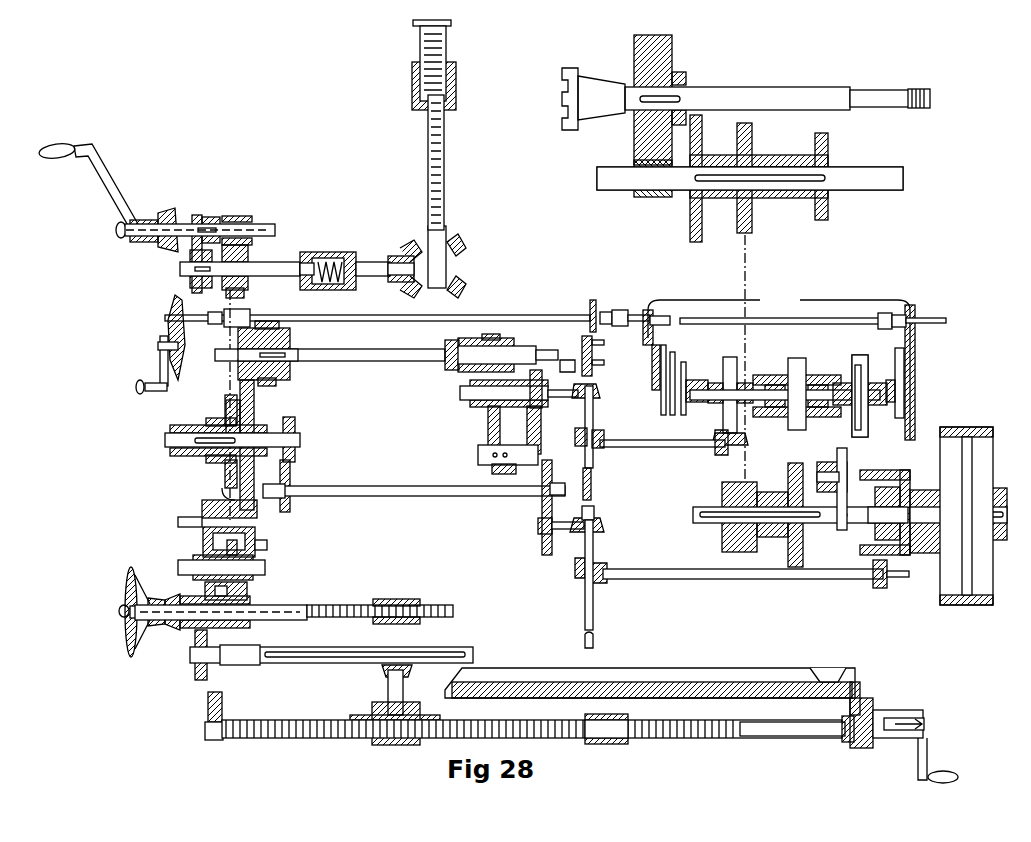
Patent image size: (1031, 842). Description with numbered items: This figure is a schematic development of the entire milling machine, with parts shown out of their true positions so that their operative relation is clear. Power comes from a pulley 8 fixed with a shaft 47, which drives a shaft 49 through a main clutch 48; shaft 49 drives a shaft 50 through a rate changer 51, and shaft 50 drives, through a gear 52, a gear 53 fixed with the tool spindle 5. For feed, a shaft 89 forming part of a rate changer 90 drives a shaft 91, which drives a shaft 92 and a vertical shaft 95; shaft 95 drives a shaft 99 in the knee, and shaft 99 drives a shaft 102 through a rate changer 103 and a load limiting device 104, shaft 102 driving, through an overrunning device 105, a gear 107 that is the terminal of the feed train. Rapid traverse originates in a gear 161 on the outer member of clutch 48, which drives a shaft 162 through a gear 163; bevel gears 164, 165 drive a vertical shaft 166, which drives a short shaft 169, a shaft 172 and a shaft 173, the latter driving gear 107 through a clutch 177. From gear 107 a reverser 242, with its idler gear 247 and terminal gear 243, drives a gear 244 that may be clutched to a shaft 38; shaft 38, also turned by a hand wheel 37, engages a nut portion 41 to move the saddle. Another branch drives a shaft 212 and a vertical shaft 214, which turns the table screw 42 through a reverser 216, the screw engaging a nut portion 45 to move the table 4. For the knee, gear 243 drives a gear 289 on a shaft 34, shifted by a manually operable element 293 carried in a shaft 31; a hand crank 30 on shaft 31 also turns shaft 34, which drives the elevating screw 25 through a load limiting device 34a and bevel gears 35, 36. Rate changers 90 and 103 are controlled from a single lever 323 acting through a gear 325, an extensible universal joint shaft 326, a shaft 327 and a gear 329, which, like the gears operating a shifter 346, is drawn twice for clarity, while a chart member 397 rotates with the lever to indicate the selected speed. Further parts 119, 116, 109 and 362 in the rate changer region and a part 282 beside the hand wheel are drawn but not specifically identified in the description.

The hand crank 30 is at (97, 160).
The manually operable element 293 is at (116, 230).
The shaft 31 is at (262, 222).
The gear 289 is at (250, 282).
The load limiting device 34a is at (318, 250).
The shaft 34 is at (378, 278).
The bevel gear 35 is at (392, 256).
The bevel gear 36 is at (462, 242).
The elevating screw 25 is at (425, 105).
The gear 53 is at (672, 52).
The tool spindle 5 is at (566, 130).
The gear 52 is at (660, 197).
The shaft 50 is at (843, 186).
The rate changer 51 is at (765, 202).
The chart member 397 is at (172, 303).
The lever 323 is at (165, 355).
The shaft 102 is at (372, 362).
The overrunning device 105 is at (286, 376).
The gear 107 is at (256, 400).
The load limiting device 104 is at (460, 376).
The shaft 99 is at (554, 398).
The rate changer 103 is at (473, 424).
The gear 325 is at (604, 306).
The gear 329 is at (779, 366).
The extensible universal joint shaft 326 is at (806, 323).
The shaft 327 is at (940, 320).
The shifter 346 is at (688, 366).
The gear 119 is at (720, 383).
The shaft 91 is at (722, 420).
The gear 116 is at (786, 408).
The rate changer 90 is at (786, 370).
The gear 109 is at (855, 368).
The pin 362 is at (892, 372).
The shaft 89 is at (862, 424).
The shaft 92 is at (676, 446).
The vertical shaft 95 is at (594, 481).
The shaft 173 is at (297, 442).
The clutch 177 is at (215, 488).
The shaft 172 is at (378, 490).
The short shaft 169 is at (560, 535).
The bevel gear 165 is at (596, 548).
The bevel gear 164 is at (604, 562).
The shaft 166 is at (594, 600).
The shaft 162 is at (713, 579).
The gear 163 is at (884, 588).
The shaft 49 is at (712, 525).
The gear 161 is at (880, 462).
The main clutch 48 is at (900, 470).
The shaft 47 is at (997, 524).
The pulley 8 is at (948, 606).
The reverser 242 is at (191, 541).
The gear 243 is at (240, 549).
The idler gear 247 is at (264, 546).
The gear 244 is at (250, 590).
The knob 282 is at (118, 612).
The hand wheel 37 is at (136, 655).
The shaft 38 is at (284, 618).
The nut portion 41 is at (416, 590).
The shaft 212 is at (252, 662).
The vertical shaft 214 is at (400, 692).
The reverser 216 is at (440, 723).
The nut portion 45 is at (582, 722).
The table screw 42 is at (748, 724).
The table 4 is at (762, 666).